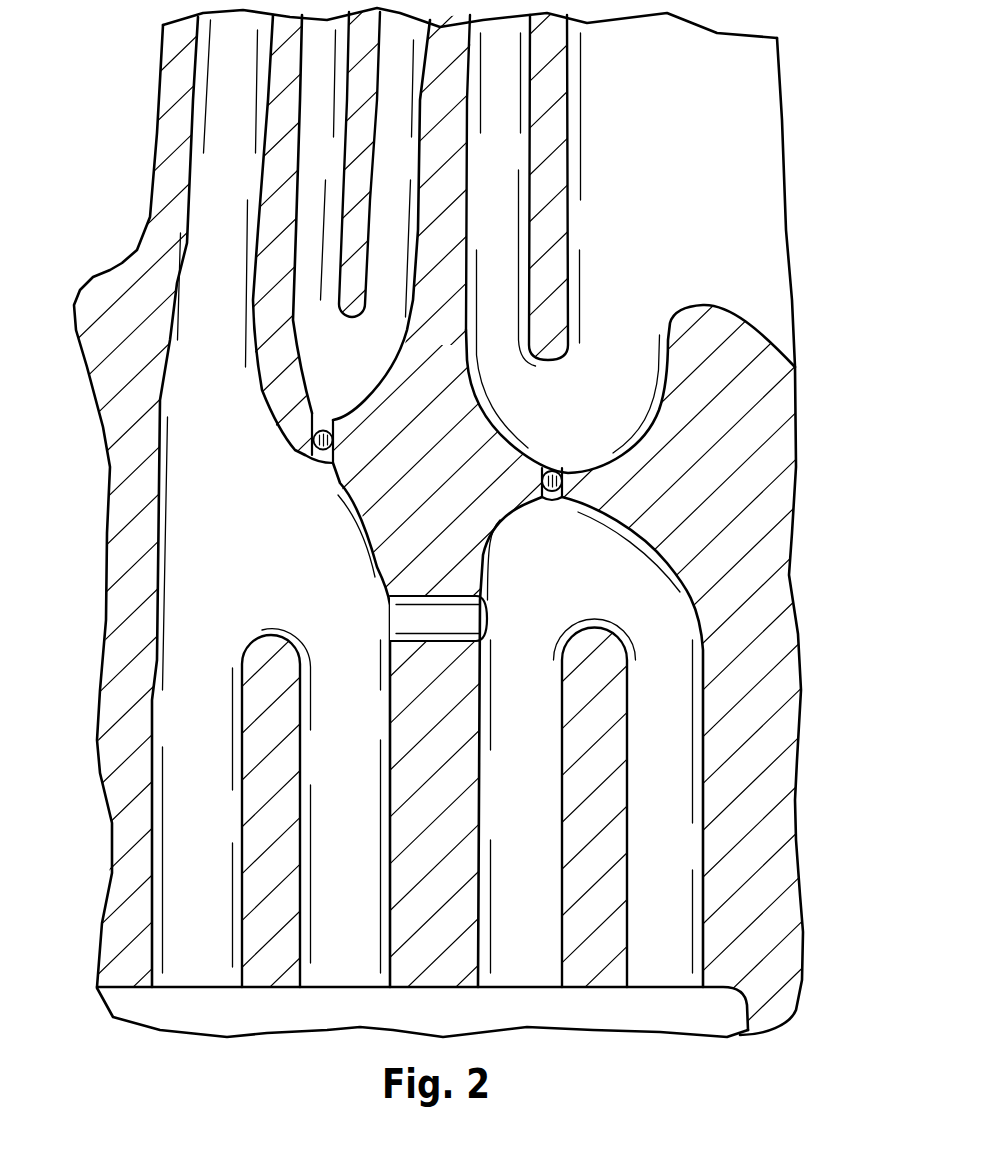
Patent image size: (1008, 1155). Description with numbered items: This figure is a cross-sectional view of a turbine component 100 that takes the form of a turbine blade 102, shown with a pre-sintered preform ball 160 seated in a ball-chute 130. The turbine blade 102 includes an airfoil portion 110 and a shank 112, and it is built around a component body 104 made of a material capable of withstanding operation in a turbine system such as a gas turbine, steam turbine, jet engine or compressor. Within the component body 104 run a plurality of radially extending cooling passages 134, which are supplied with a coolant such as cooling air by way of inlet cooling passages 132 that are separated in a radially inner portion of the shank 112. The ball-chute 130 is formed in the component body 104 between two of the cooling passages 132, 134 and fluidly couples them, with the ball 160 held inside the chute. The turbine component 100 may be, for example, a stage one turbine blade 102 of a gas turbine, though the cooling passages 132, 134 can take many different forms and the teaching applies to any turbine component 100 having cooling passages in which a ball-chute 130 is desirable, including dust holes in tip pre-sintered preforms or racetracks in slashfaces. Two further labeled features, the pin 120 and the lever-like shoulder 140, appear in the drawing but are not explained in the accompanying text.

The turbine component 100 is at (767, 368).
The turbine blade 102 is at (767, 368).
The component body 104 is at (768, 654).
The airfoil portion 110 is at (148, 196).
The shank 112 is at (95, 616).
The pin 120 is at (392, 607).
The ball-chute 130 is at (310, 422).
The inlet cooling passages 132 is at (330, 967).
The radially extending cooling passages 134 is at (310, 337).
The lever arm 140 is at (566, 498).
The ball 160 is at (320, 452).